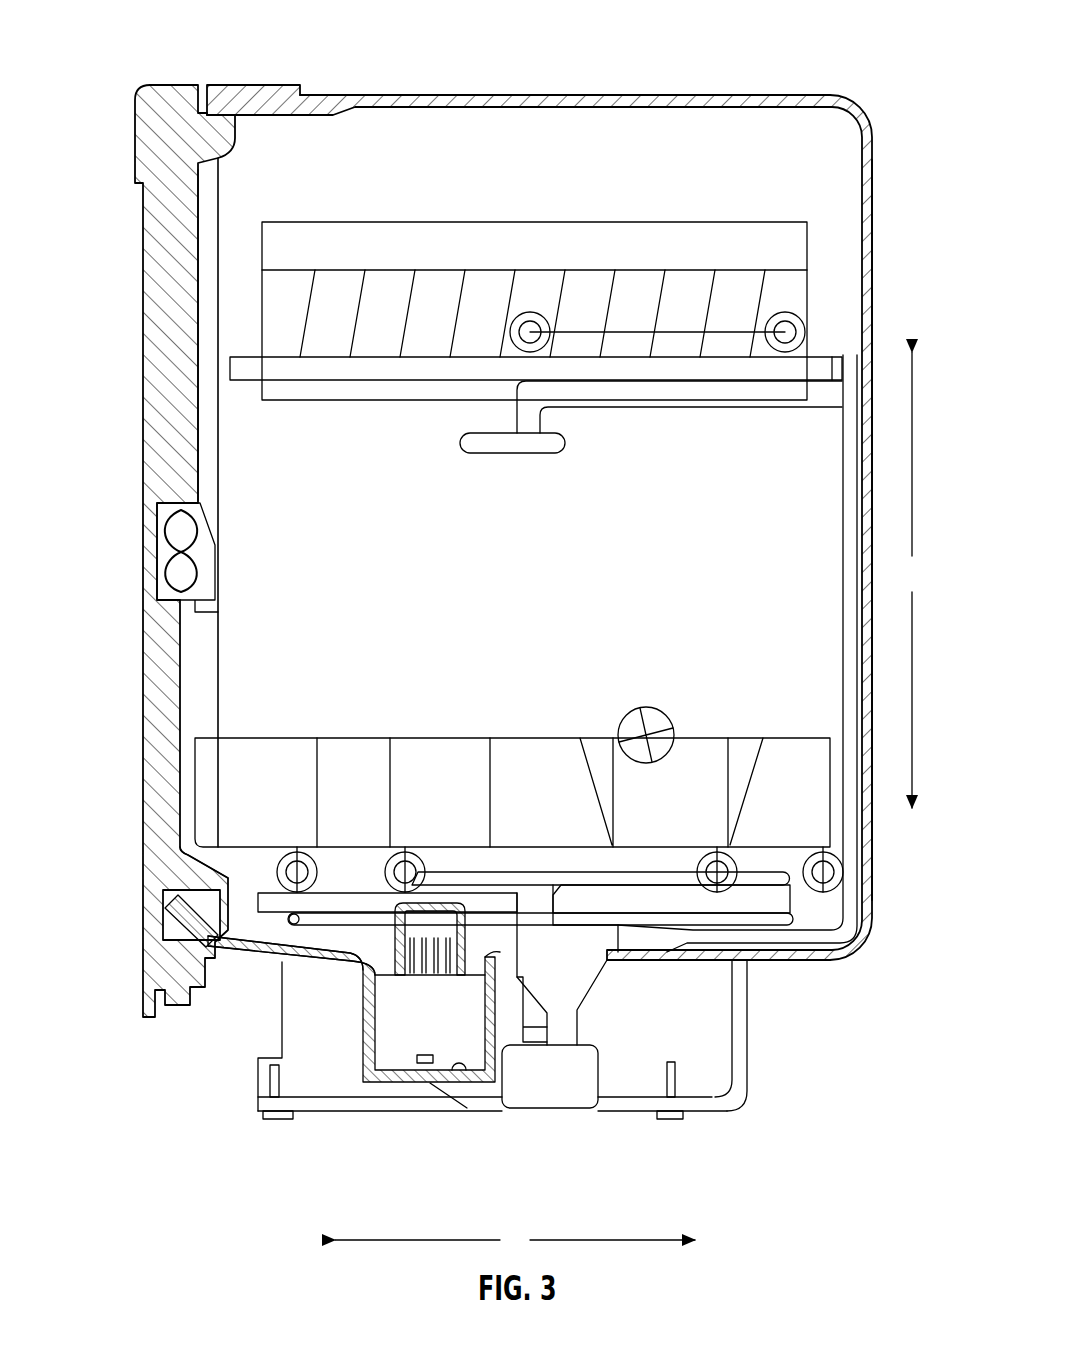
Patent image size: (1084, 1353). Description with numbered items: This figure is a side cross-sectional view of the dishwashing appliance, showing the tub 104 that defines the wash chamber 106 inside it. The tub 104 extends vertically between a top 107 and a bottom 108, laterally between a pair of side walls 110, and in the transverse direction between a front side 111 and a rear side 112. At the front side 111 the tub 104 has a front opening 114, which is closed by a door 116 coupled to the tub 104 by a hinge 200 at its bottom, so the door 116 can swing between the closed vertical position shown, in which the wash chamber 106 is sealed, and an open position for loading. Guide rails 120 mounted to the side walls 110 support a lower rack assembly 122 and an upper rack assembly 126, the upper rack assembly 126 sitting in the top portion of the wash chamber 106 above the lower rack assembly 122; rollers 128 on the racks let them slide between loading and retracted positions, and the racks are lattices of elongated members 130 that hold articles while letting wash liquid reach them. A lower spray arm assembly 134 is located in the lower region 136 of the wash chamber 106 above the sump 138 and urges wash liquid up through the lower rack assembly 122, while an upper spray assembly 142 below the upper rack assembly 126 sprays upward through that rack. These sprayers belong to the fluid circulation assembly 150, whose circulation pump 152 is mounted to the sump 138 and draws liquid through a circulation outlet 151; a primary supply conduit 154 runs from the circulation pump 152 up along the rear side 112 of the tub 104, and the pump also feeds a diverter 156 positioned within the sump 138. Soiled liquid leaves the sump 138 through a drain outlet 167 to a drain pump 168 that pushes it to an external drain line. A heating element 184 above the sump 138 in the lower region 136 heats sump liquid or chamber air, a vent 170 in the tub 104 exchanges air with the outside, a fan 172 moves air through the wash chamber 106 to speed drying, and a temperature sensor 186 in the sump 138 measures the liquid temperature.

The tub 104 is at (738, 92).
The wash chamber 106 is at (266, 456).
The top 107 is at (600, 86).
The bottom 108 is at (778, 967).
The side walls 110 is at (529, 596).
The front side 111 is at (218, 680).
The rear side 112 is at (873, 212).
The front opening 114 is at (226, 242).
The door 116 is at (150, 354).
The guide rails 120 is at (402, 374).
The lower rack assembly 122 is at (430, 731).
The upper rack assembly 126 is at (456, 218).
The rollers 128 is at (528, 312).
The elongated members 130 is at (356, 306).
The lower spray arm assembly 134 is at (526, 880).
The lower region 136 is at (243, 863).
The sump 138 is at (362, 1034).
The upper spray assembly 142 is at (526, 442).
The fluid circulation assembly 150 is at (628, 1064).
The circulation outlet 151 is at (425, 1066).
The circulation pump 152 is at (513, 1022).
The primary supply conduit 154 is at (851, 531).
The diverter 156 is at (599, 969).
The drain outlet 167 is at (460, 1064).
The drain pump 168 is at (571, 1094).
The vent 170 is at (645, 707).
The fan 172 is at (207, 560).
The heating element 184 is at (346, 926).
The temperature sensor 186 is at (414, 1086).
The hinge 200 is at (185, 938).